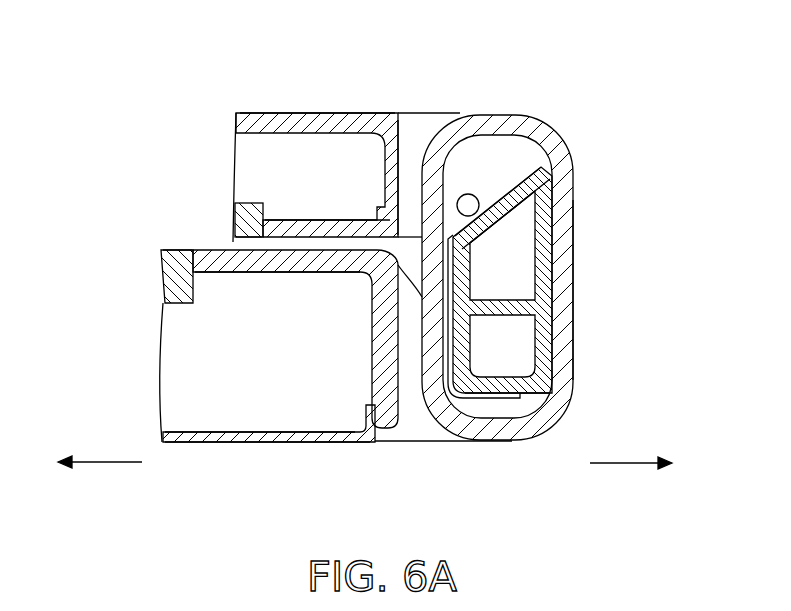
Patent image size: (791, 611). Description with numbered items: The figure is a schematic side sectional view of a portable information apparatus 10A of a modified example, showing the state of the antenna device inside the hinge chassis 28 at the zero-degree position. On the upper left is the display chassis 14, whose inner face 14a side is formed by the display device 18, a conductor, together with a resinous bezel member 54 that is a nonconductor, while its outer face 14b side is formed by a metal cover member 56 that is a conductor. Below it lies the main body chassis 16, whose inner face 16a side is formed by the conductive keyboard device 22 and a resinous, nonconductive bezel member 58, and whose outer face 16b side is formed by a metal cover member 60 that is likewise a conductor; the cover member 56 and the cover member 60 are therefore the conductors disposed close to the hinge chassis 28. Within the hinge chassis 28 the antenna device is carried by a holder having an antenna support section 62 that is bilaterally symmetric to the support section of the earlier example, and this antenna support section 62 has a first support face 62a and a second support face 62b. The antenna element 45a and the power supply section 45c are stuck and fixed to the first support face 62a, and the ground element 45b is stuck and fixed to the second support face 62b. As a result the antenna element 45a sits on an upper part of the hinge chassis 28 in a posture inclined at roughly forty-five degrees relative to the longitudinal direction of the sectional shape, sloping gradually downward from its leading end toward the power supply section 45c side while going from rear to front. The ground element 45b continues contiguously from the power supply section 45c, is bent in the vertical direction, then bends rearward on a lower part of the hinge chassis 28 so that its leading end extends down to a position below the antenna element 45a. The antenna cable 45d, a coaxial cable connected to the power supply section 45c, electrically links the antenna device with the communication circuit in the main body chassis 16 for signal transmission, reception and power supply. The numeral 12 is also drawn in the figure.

The portable information apparatus 10A is at (86, 35).
The weather strip 12 is at (575, 146).
The display chassis 14 is at (240, 85).
The inner face 14a is at (240, 247).
The outer face 14b is at (278, 112).
The main body chassis 16 is at (190, 460).
The inner face 16a is at (175, 250).
The outer face 16b is at (305, 442).
The display device 18 is at (243, 205).
The keyboard device 22 is at (172, 272).
The hinge chassis 28 is at (563, 340).
The antenna element 45a is at (527, 163).
The ground element 45b is at (495, 398).
The power supply section 45c is at (507, 222).
The antenna cable 45d is at (469, 194).
The bezel member 54 is at (320, 220).
The cover member 56 is at (403, 152).
The bezel member 58 is at (292, 272).
The cover member 60 is at (250, 442).
The antenna support section 62 is at (515, 290).
The first support face 62a is at (505, 185).
The second support face 62b is at (445, 338).